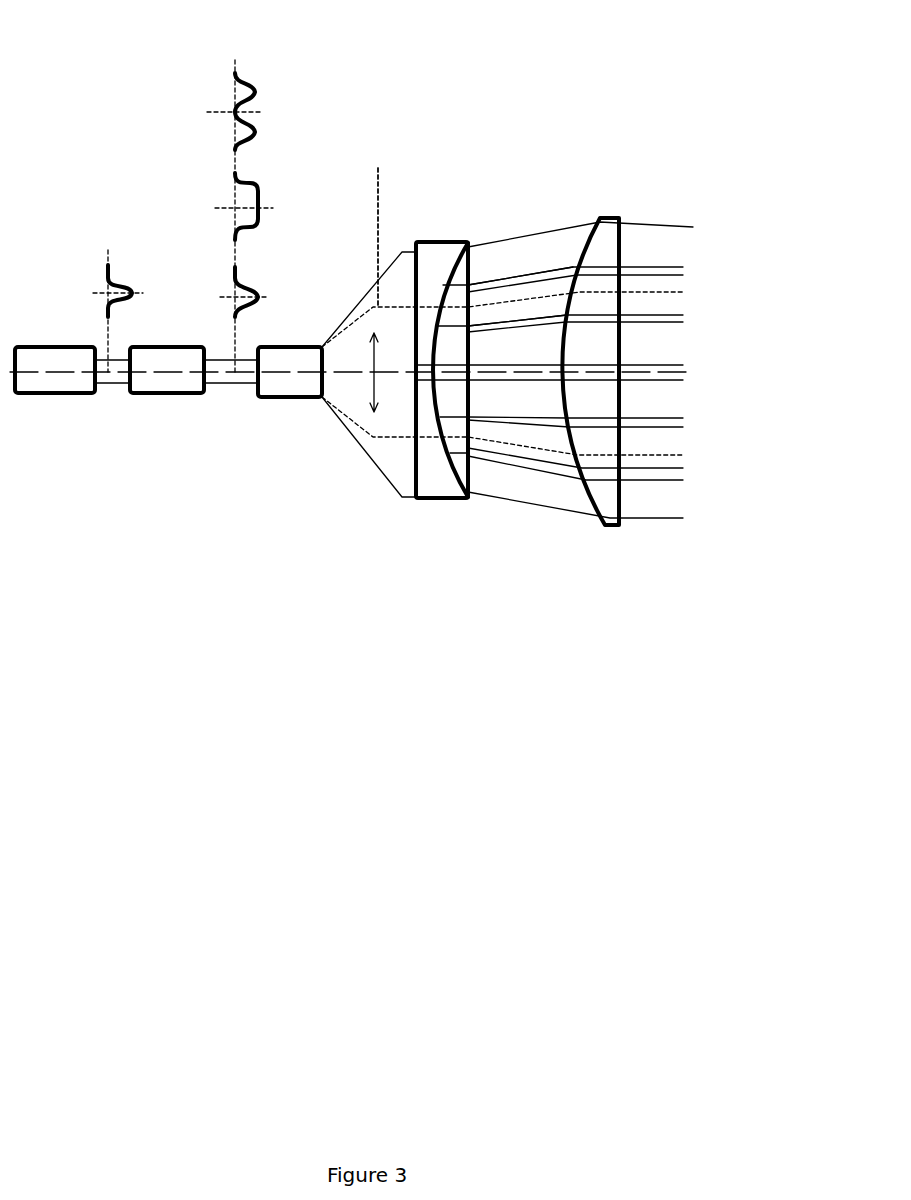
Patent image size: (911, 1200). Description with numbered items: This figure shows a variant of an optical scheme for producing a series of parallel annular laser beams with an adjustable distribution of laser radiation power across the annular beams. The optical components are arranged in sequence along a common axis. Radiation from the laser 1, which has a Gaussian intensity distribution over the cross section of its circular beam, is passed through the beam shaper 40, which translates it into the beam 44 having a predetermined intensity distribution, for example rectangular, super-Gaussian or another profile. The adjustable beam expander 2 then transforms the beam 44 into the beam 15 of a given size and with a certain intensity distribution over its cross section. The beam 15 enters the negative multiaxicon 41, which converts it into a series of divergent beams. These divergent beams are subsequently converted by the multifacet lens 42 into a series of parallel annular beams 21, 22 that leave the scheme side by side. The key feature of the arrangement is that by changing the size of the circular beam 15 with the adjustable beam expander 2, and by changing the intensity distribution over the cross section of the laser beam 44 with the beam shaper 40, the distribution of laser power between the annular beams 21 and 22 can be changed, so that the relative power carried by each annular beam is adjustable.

The laser 1 is at (37, 383).
The beam shaper 40 is at (140, 383).
The adjustable beam expander 2 is at (270, 383).
The beam 15 is at (402, 252).
The multiaxicon 41 is at (432, 487).
The annular beam 21 is at (520, 310).
The annular beam 22 is at (655, 245).
The multifacet lens 42 is at (108, 270).
The beam 44 is at (235, 172).